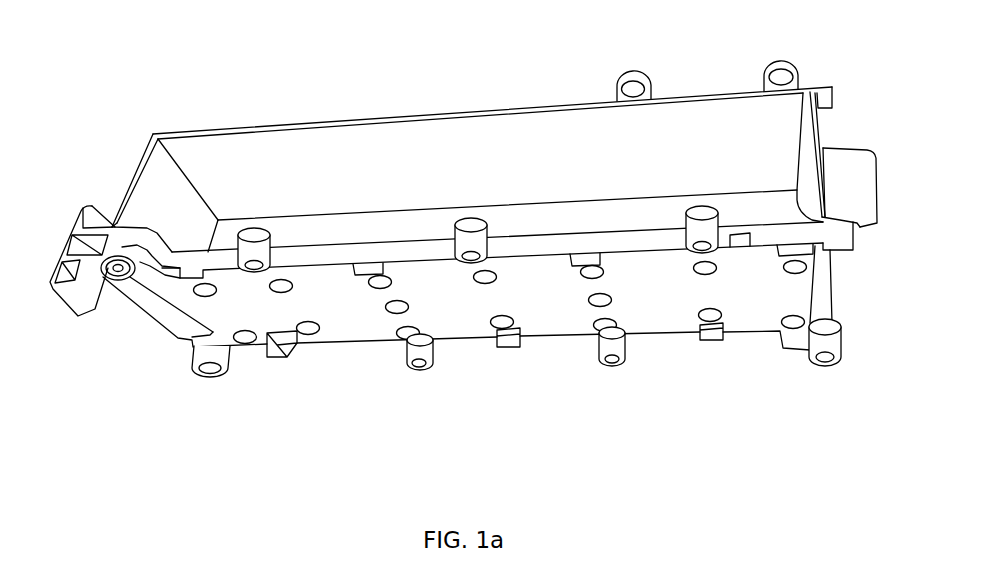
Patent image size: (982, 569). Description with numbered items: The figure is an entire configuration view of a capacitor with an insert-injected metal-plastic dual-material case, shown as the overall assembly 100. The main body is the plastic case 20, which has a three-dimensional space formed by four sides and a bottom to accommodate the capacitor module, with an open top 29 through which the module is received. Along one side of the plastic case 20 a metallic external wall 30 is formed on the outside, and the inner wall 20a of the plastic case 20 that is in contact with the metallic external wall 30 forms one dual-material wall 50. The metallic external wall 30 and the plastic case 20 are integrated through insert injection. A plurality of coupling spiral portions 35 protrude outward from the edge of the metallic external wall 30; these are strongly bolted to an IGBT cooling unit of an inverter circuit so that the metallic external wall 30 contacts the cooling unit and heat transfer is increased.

The battery module assembly 100 is at (177, 37).
The plastic case 20 is at (323, 177).
The back wall inner surface of housing 29 is at (388, 181).
The inner wall of the plastic case 20a is at (331, 253).
The metallic external wall 30 is at (453, 307).
The coupling spiral portions 35 is at (601, 348).
The dual-material wall 50 is at (468, 450).